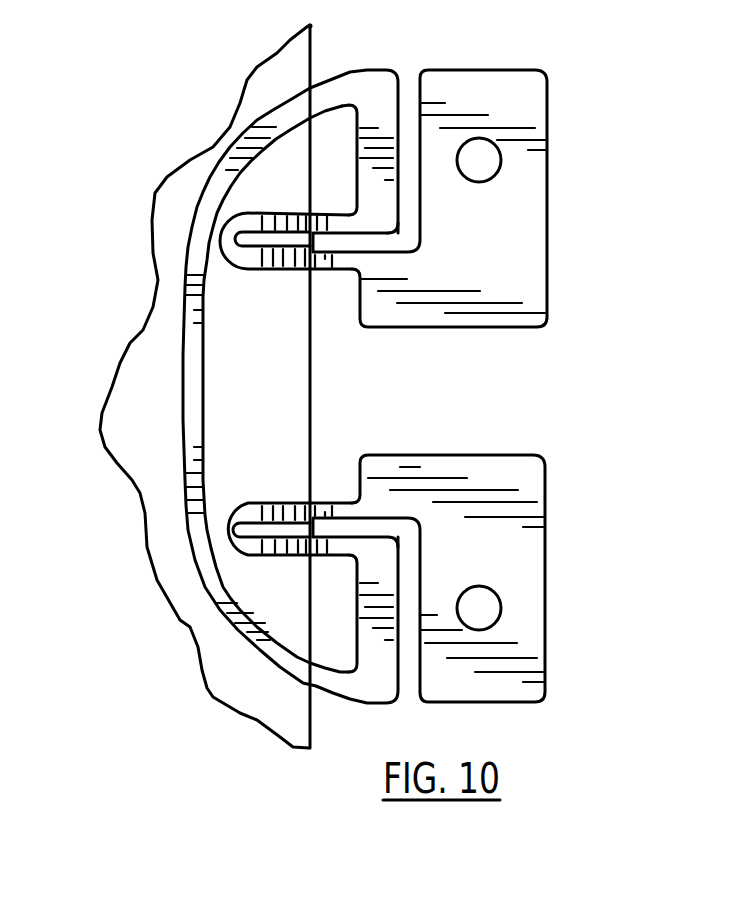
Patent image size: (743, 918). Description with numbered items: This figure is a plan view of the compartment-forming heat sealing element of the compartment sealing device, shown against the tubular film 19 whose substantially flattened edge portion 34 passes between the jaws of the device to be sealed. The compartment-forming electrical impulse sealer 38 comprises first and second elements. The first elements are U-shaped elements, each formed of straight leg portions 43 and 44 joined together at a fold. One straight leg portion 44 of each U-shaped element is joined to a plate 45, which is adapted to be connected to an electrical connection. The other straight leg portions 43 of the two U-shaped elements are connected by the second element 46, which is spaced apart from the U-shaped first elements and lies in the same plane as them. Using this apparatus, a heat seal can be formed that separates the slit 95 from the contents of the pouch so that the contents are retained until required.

The tubular film 19 is at (88, 377).
The substantially flattened edge portion 34 is at (295, 411).
The electrical impulse sealer 38 is at (555, 207).
The straight leg portion 43 is at (331, 221).
The straight leg portion 44 is at (331, 265).
The plate 45 is at (527, 297).
The second element 46 is at (194, 400).
The slit 95 is at (262, 271).